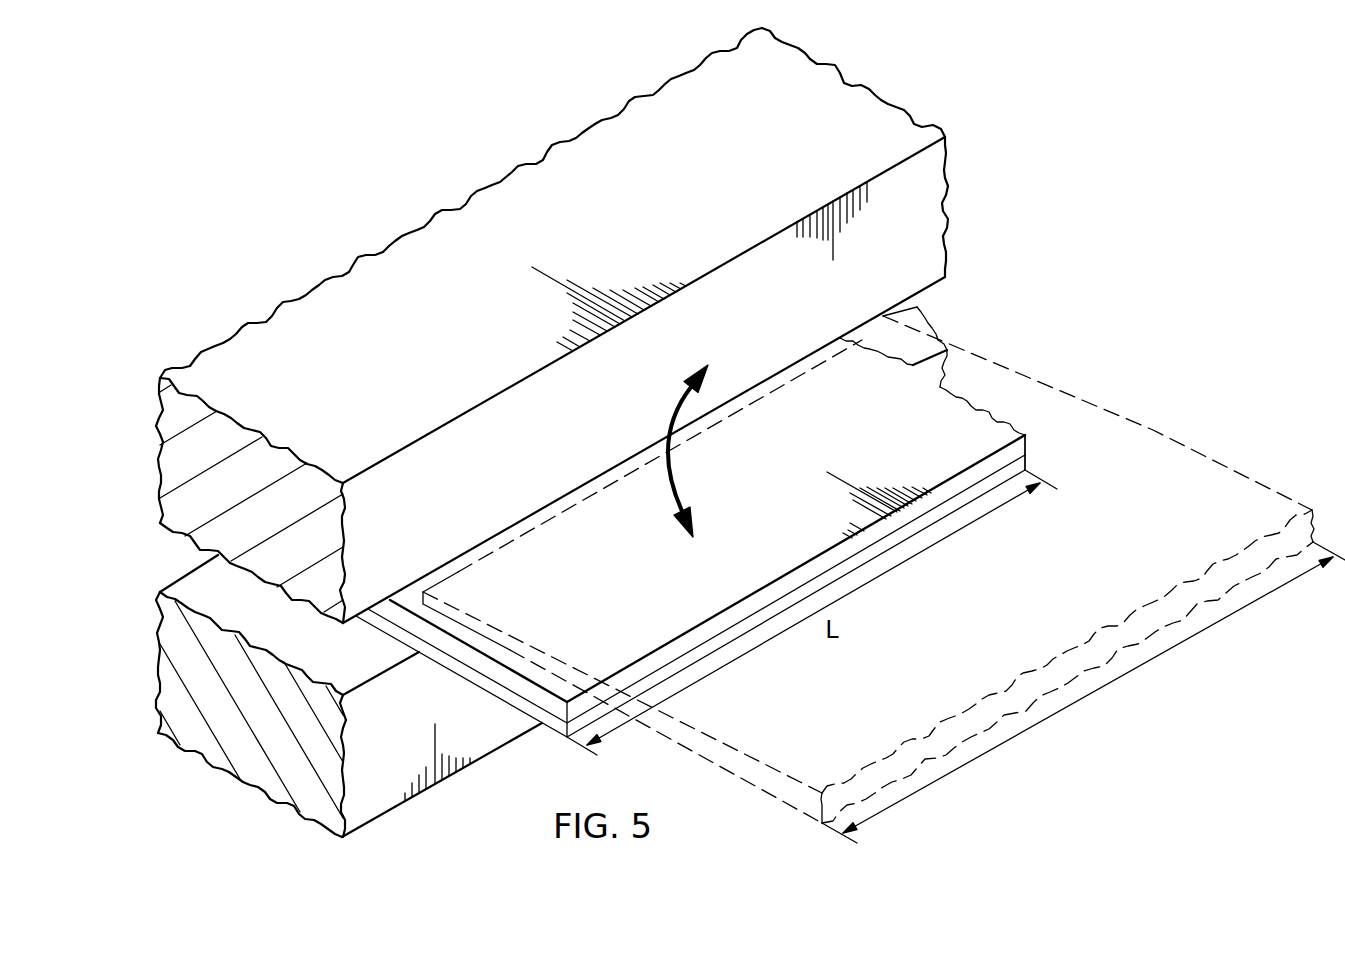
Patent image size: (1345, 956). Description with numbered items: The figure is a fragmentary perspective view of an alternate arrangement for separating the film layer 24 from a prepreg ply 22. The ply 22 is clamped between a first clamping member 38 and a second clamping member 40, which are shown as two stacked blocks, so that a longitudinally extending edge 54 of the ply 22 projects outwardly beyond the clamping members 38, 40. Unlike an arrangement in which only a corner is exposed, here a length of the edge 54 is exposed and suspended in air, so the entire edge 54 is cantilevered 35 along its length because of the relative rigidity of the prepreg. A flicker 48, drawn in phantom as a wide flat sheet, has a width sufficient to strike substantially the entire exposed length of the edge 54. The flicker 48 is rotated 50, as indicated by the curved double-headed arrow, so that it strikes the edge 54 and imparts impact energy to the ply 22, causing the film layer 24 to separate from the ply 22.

The ply 22 is at (515, 560).
The film layer 24 is at (458, 668).
The cantilevered 35 is at (1017, 342).
The first clamping member 38 is at (160, 422).
The second clamping member 40 is at (158, 662).
The flicker 48 is at (1113, 406).
The rotated 50 is at (673, 415).
The edge 54 is at (1013, 453).